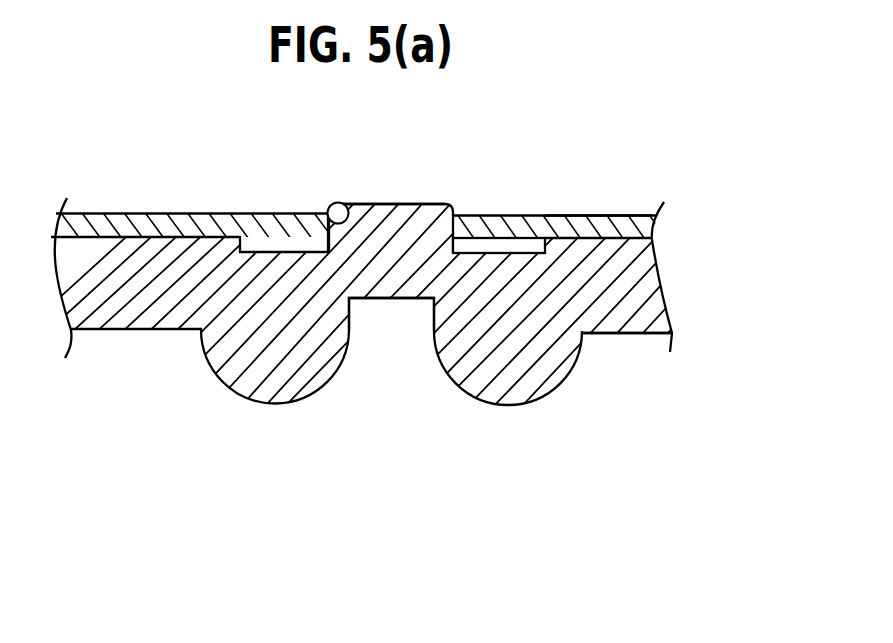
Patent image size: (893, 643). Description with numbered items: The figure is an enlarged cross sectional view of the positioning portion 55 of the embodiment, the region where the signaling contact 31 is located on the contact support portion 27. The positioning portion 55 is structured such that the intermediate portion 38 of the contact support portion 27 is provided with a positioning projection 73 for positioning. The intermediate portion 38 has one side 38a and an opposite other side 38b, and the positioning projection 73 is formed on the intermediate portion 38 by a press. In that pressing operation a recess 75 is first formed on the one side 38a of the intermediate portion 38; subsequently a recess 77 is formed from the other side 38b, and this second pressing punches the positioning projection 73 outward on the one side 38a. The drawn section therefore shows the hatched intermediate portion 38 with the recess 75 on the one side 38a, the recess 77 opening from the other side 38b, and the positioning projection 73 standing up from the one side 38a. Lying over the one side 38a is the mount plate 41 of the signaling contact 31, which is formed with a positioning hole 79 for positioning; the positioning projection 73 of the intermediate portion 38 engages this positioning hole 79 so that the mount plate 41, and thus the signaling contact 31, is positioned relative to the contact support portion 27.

The contact support portion 27 is at (658, 256).
The signaling contact 31 is at (598, 212).
The intermediate portion 38 is at (650, 337).
The one side of the intermediate portion 38a is at (625, 215).
The other side of the intermediate portion 38b is at (613, 335).
The mount plate 41 is at (132, 213).
The positioning portion 55 is at (430, 199).
The positioning projection 73 is at (372, 203).
The recess 75 is at (519, 250).
The recess 77 is at (395, 300).
The positioning hole 79 is at (333, 201).